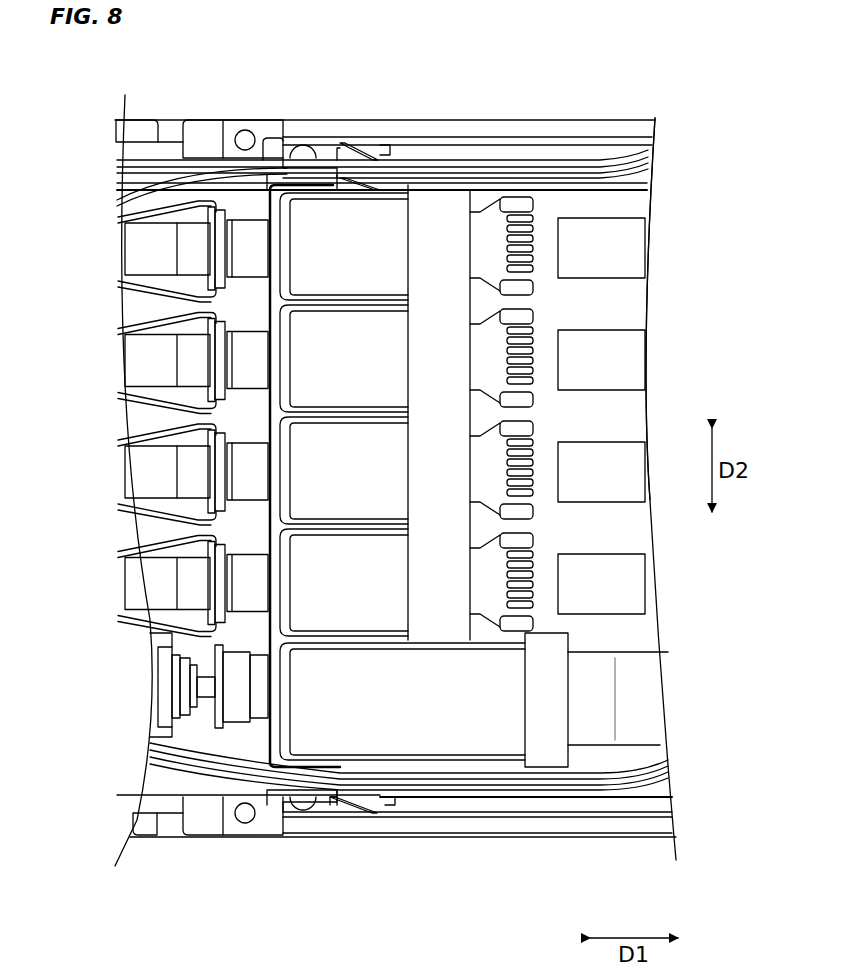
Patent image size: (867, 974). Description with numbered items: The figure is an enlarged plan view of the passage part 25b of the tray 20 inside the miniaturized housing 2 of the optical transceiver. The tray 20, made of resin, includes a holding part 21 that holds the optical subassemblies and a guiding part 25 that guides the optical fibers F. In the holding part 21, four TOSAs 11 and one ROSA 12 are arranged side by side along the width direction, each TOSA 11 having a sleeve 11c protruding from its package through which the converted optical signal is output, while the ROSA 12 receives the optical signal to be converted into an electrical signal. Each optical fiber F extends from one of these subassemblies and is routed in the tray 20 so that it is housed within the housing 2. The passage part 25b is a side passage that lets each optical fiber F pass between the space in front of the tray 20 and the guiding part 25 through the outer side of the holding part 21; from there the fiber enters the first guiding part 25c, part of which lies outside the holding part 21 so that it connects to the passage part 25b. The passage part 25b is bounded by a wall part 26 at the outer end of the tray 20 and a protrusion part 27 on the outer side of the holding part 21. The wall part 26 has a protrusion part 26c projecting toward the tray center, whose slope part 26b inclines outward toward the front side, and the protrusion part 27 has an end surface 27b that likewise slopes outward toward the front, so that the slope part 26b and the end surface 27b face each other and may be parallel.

The housing 2 is at (318, 120).
The tray 20 is at (638, 130).
The holding part 21 is at (450, 247).
The guiding part 25 is at (600, 143).
The passage part 25b is at (400, 163).
The first guiding part 25c is at (500, 153).
The wall part 26 is at (372, 150).
The slope part 26b is at (372, 180).
The protrusion part 26c is at (385, 145).
The protrusion part 27 is at (322, 185).
The end surface 27b is at (333, 186).
The TOSA 11 is at (358, 247).
The sleeve 11c is at (147, 238).
The ROSA 12 is at (420, 695).
The optical fiber F is at (558, 173).